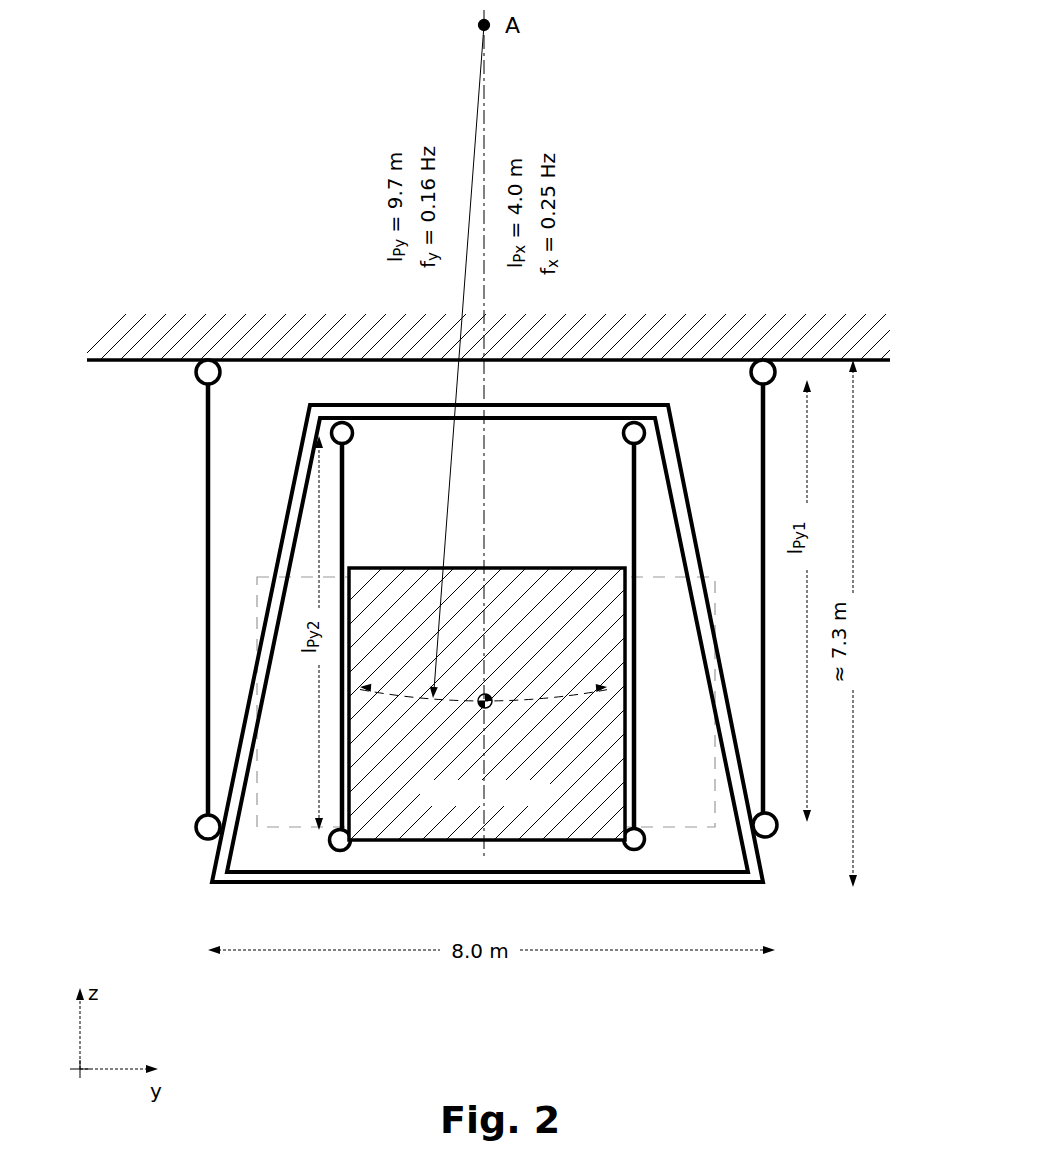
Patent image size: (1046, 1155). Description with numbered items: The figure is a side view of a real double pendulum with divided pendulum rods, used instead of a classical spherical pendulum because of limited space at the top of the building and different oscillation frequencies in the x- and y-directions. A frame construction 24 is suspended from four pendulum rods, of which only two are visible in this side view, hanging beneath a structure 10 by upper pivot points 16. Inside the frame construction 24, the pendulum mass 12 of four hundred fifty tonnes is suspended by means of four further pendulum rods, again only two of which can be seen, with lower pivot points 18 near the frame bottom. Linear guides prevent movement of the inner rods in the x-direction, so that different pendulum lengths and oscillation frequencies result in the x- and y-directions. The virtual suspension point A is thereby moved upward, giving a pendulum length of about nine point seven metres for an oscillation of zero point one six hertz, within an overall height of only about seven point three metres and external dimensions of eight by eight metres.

The ceiling / supporting structure 10 is at (822, 310).
The pendulum mass 12 is at (418, 566).
The upper pivot joint 16 is at (200, 376).
The lower pivot joint 18 is at (196, 836).
The frame construction 24 is at (236, 750).